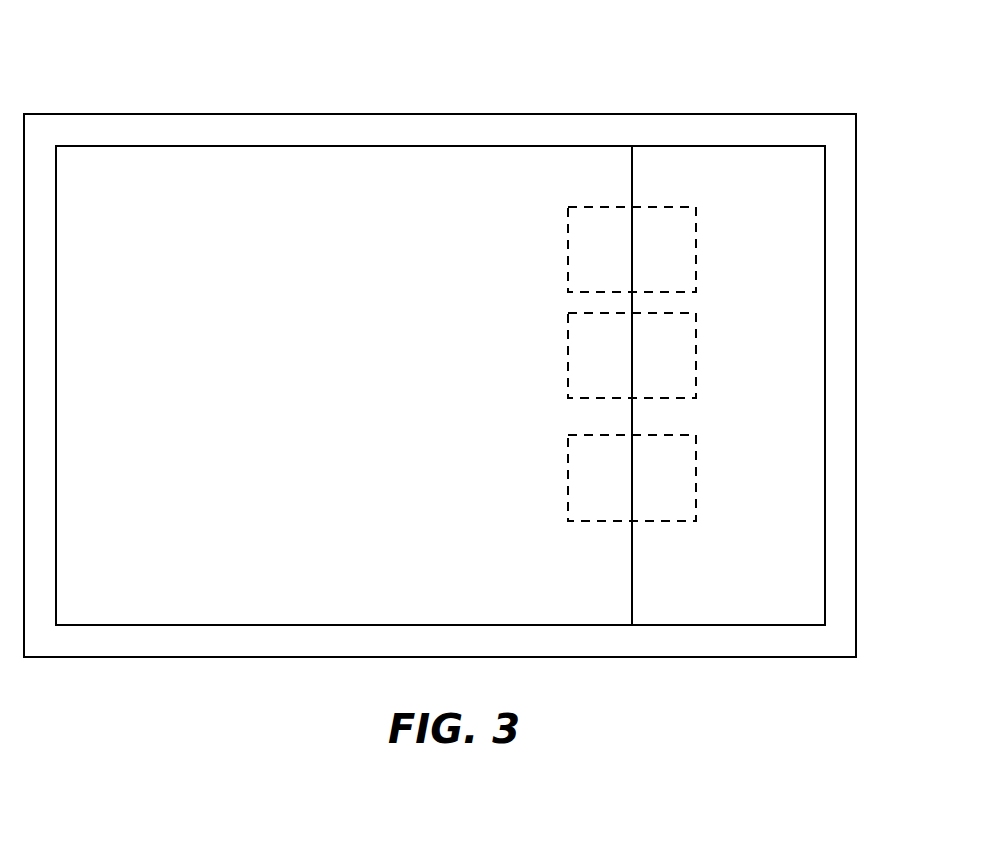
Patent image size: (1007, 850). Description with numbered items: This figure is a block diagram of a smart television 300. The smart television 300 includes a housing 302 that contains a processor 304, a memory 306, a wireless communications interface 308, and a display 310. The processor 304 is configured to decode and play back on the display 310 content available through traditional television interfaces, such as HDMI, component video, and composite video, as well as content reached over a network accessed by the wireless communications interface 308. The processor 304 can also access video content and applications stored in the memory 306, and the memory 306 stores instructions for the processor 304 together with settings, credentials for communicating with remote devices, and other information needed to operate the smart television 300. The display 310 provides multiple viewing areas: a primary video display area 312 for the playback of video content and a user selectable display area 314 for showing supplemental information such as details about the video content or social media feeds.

The smart television 300 is at (706, 78).
The housing 302 is at (440, 353).
The processor 304 is at (588, 240).
The memory 306 is at (588, 345).
The wireless communications interface 308 is at (588, 468).
The display 310 is at (440, 335).
The primary video display area 312 is at (344, 337).
The user selectable display area 314 is at (701, 338).